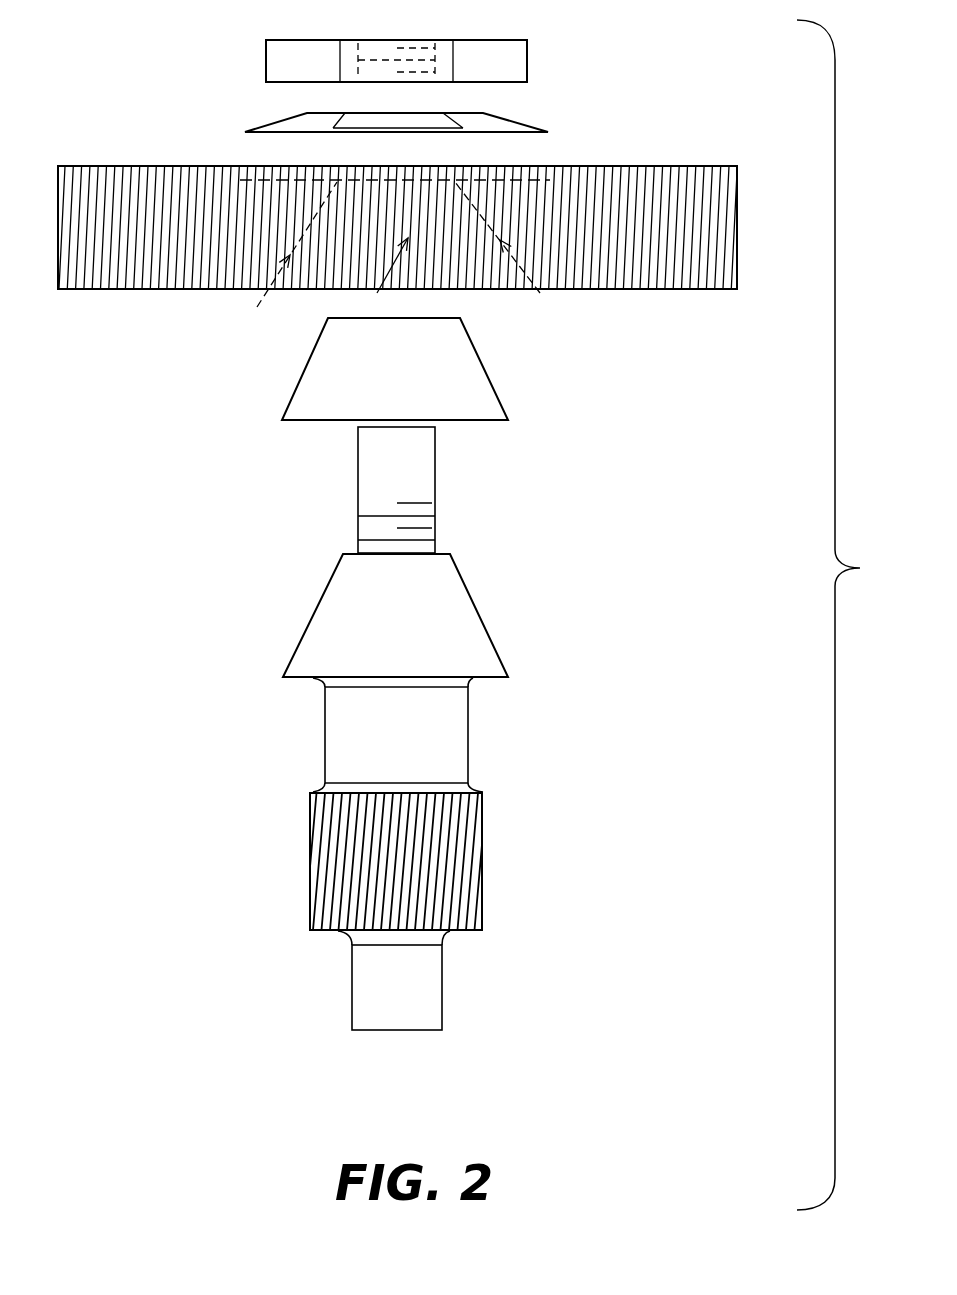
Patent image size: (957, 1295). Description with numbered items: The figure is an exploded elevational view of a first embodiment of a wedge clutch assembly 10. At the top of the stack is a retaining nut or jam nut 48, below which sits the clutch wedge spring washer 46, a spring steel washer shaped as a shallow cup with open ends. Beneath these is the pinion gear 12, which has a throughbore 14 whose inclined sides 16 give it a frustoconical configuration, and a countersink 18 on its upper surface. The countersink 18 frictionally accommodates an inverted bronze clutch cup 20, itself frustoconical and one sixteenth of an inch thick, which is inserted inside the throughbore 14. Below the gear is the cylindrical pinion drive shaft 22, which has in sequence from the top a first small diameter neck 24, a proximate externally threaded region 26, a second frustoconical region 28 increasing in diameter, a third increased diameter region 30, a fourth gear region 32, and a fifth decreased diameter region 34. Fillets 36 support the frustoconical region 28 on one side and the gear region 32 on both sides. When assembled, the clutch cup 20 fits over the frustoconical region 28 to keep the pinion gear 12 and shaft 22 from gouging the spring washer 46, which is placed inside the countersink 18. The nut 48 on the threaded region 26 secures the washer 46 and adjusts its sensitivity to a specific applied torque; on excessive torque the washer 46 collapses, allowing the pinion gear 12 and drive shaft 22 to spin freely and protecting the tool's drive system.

The wedge clutch assembly 10 is at (848, 615).
The pinion gear 12 is at (742, 232).
The throughbore 14 is at (386, 281).
The inclined sides 16 is at (395, 257).
The countersink 18 is at (515, 172).
The bronze clutch cup 20 is at (420, 385).
The pinion drive shaft 22 is at (228, 628).
The first small diameter neck 24 is at (452, 462).
The threaded region 26 is at (438, 518).
The second frustoconical region 28 is at (417, 627).
The third increased diameter region 30 is at (407, 760).
The fourth gear region 32 is at (308, 852).
The fifth decreased diameter region 34 is at (413, 1007).
The fillets 36 is at (483, 678).
The clutch wedge spring washer 46 is at (268, 126).
The retaining nut or jam nut 48 is at (505, 65).